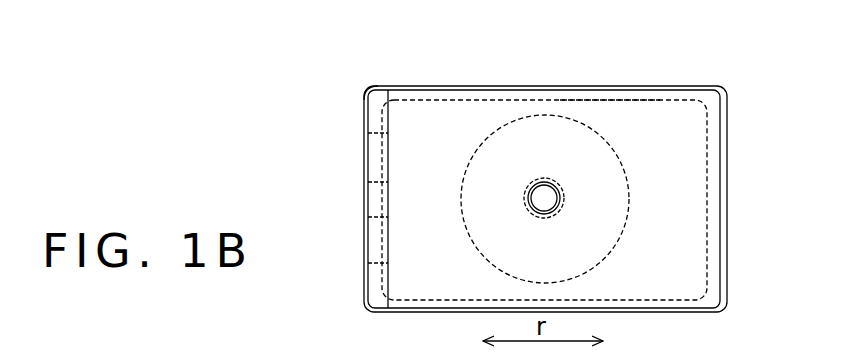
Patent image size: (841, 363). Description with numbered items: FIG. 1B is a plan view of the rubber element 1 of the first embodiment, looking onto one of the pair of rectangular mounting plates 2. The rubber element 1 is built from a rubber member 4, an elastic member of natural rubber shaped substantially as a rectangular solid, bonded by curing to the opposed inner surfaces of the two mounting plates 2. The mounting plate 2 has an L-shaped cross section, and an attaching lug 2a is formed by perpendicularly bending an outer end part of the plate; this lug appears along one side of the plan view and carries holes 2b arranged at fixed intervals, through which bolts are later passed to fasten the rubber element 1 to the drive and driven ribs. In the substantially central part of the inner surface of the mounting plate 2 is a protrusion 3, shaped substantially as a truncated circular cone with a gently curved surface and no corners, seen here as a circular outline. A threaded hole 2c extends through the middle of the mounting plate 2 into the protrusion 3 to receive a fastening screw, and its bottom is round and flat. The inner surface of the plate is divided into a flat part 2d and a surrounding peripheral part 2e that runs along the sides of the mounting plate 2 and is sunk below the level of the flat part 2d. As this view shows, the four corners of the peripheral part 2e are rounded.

The rubber element 1 is at (738, 66).
The mounting plate 2 is at (695, 145).
The attaching lug 2a is at (368, 91).
The holes 2b is at (370, 193).
The threaded hole 2c is at (544, 192).
The flat part 2d is at (481, 110).
The peripheral part 2e is at (605, 100).
The protrusion 3 is at (625, 225).
The rubber member 4 is at (428, 88).